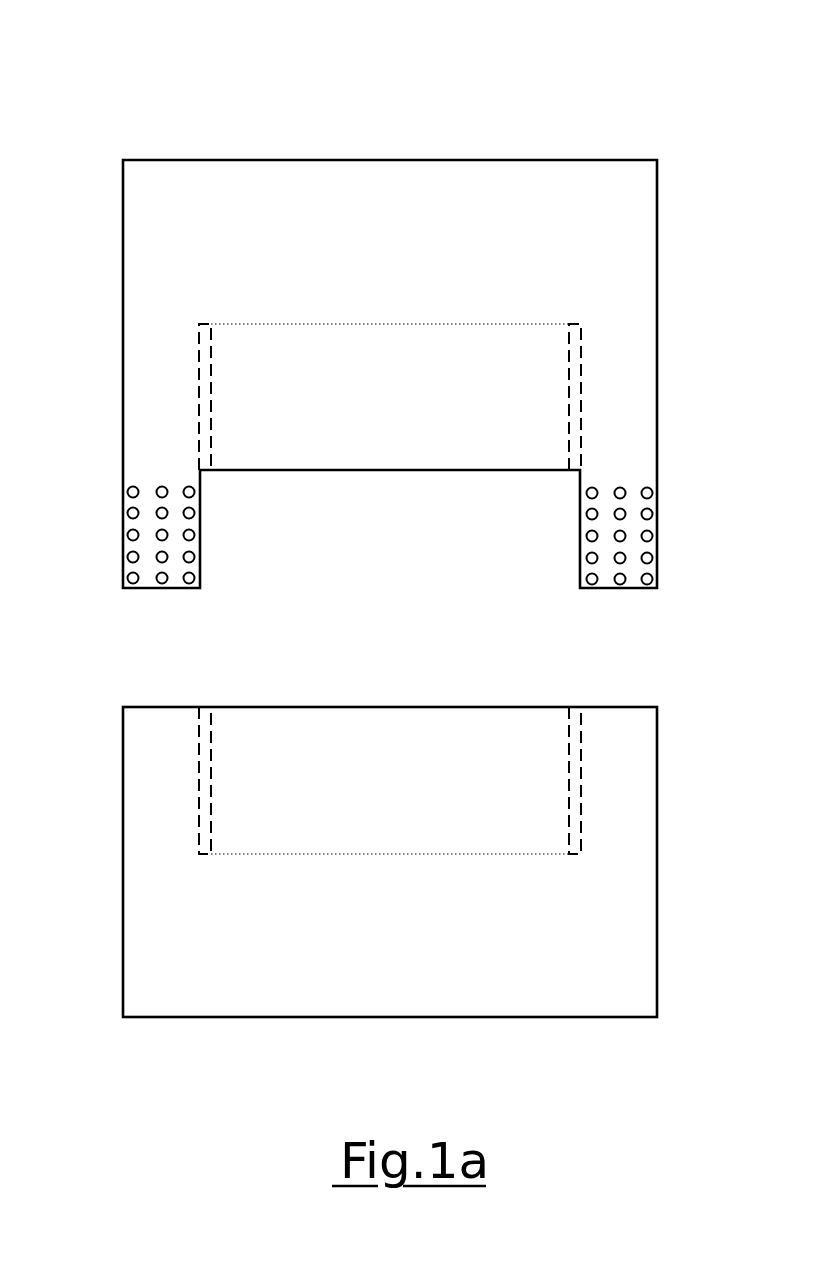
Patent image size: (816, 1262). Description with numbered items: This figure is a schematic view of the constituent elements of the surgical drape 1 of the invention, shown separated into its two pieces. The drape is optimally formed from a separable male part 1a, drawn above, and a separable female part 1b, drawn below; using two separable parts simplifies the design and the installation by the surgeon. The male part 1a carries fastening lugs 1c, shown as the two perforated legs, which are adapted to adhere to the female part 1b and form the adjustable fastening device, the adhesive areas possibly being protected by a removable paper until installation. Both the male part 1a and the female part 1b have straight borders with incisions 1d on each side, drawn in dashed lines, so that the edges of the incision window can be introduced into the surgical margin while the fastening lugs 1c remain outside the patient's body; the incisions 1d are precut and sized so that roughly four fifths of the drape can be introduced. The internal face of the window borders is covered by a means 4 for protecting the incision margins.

The surgical drape 1 is at (703, 86).
The male part 1a is at (381, 192).
The female part 1b is at (378, 993).
The fastening lugs 1c is at (155, 589).
The incisions 1d is at (205, 418).
The means for protecting the incision margins 4 is at (403, 403).